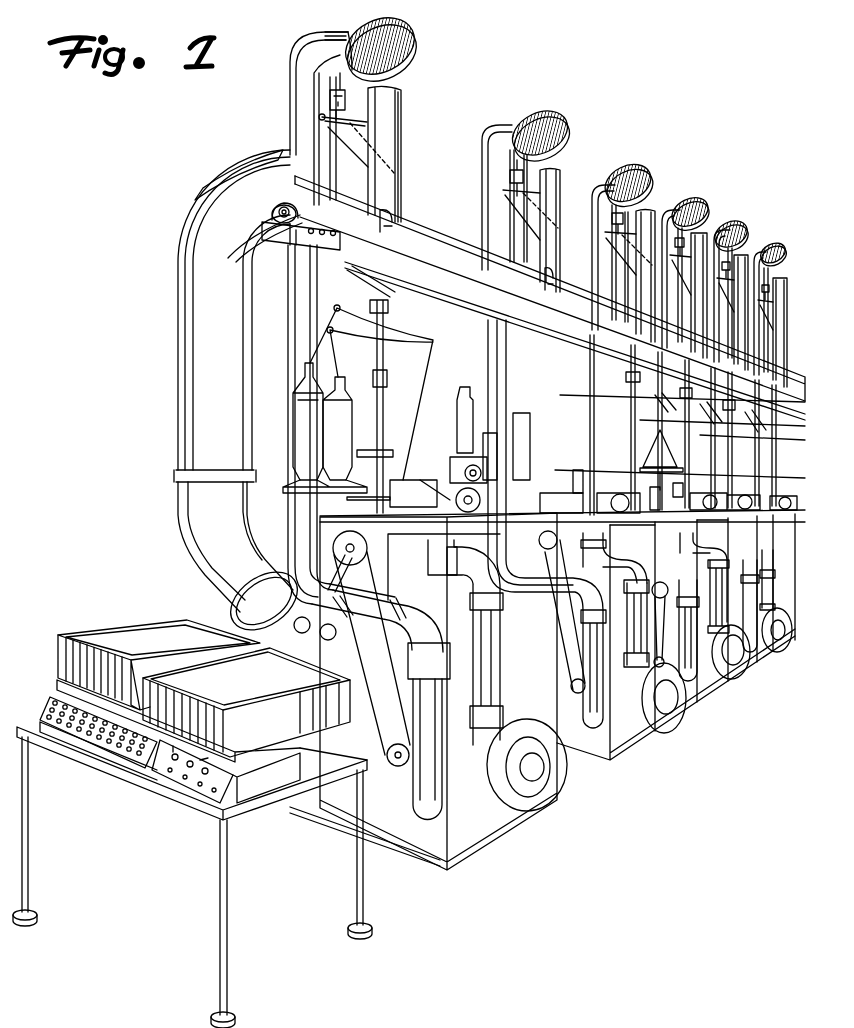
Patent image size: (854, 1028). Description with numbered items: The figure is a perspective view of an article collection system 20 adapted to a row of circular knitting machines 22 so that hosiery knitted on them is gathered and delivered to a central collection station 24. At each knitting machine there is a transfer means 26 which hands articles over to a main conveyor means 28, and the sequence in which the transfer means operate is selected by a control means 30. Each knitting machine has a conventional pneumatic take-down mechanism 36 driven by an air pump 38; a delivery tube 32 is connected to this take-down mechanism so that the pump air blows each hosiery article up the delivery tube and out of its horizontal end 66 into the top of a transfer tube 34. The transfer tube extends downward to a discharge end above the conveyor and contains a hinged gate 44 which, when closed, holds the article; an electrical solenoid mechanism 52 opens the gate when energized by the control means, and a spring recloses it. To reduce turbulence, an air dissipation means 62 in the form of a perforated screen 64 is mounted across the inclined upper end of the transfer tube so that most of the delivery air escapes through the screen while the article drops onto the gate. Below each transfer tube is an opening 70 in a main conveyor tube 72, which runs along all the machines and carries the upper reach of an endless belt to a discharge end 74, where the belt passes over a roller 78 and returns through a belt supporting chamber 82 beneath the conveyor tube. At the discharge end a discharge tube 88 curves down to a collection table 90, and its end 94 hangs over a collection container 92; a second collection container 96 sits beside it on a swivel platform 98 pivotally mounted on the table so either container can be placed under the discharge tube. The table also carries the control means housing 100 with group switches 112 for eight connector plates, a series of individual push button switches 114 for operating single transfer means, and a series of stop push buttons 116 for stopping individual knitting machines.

The article collection system 20 is at (669, 165).
The circular knitting machines 22 is at (505, 834).
The central collection station 24 is at (135, 829).
The transfer means 26 is at (290, 62).
The main conveyor means 28 is at (436, 226).
The control means 30 is at (119, 783).
The delivery tube 32 is at (300, 306).
The transfer tube 34 is at (403, 148).
The pneumatic take-down mechanism 36 is at (393, 700).
The air pump 38 is at (560, 792).
The hinged gate 44 is at (318, 118).
The electrical solenoid mechanism 52 is at (345, 95).
The air dissipation means 62 is at (416, 50).
The perforated screen 64 is at (410, 72).
The horizontal end 66 is at (338, 33).
The opening 70 is at (383, 216).
The main conveyor tube 72 is at (466, 268).
The discharge end 74 is at (258, 162).
The roller 78 is at (283, 207).
The belt supporting chamber 82 is at (452, 300).
The discharge tube 88 is at (190, 356).
The collection table 90 is at (268, 806).
The collection container 92 is at (250, 682).
The end 94 is at (262, 621).
The collection container 96 is at (166, 650).
The swivel platform 98 is at (56, 680).
The control means housing 100 is at (272, 802).
The switches 112 is at (166, 793).
The push button switches 114 is at (55, 700).
The stop push buttons 116 is at (50, 705).